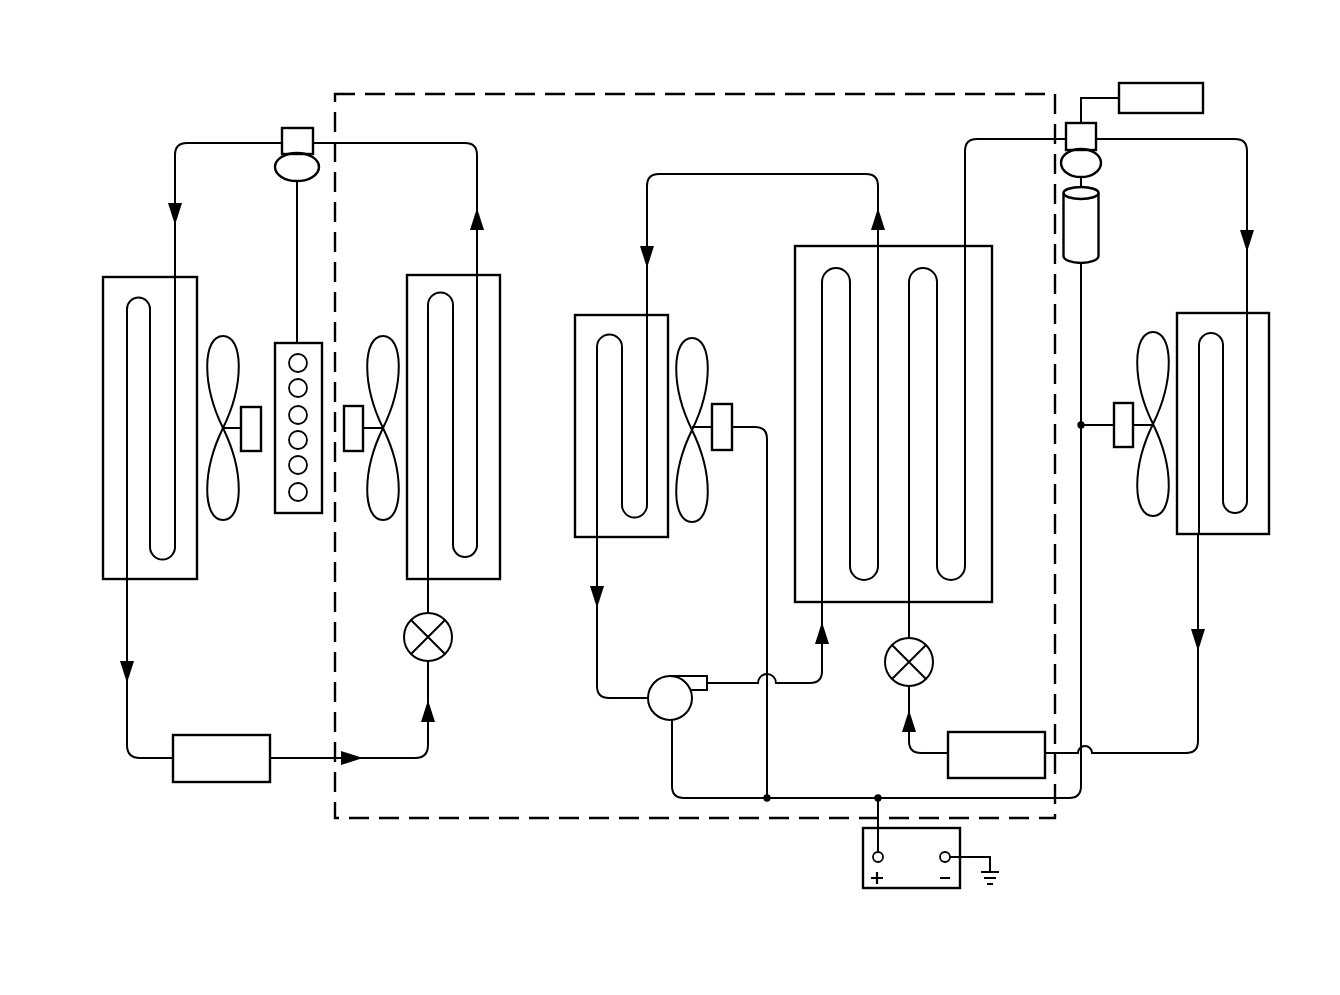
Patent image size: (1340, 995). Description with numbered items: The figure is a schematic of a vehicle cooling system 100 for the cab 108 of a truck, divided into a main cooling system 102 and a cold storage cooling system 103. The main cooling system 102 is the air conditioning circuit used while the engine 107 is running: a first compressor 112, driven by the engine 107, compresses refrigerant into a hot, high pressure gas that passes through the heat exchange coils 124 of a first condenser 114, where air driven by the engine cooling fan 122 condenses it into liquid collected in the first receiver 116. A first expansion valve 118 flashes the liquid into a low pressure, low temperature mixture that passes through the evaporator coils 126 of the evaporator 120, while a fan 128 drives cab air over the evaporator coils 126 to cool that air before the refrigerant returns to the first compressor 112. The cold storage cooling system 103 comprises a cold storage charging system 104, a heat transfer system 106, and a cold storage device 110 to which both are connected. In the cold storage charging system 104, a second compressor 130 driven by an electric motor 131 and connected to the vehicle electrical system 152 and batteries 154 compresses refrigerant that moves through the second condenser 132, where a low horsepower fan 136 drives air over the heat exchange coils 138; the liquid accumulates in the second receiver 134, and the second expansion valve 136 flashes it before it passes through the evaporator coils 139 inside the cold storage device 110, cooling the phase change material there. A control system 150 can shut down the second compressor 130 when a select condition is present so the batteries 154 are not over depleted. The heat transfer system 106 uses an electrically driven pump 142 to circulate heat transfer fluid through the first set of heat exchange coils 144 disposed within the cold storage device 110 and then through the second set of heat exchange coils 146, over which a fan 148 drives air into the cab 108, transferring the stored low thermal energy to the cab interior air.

The vehicle cooling system 100 is at (185, 828).
The main cooling system 102 is at (524, 158).
The cold storage cooling system 103 is at (1053, 822).
The cold storage charging system 104 is at (1213, 740).
The heat transfer system 106 is at (877, 160).
The engine 107 is at (288, 343).
The cab 108 is at (333, 128).
The cold storage device 110 is at (905, 246).
The first compressor 112 is at (282, 128).
The first condenser 114 is at (148, 277).
The first receiver 116 is at (228, 735).
The first expansion valve 118 is at (452, 640).
The evaporator 120 is at (500, 487).
The engine cooling fan 122 is at (253, 451).
The heat exchange coils 124 is at (175, 540).
The evaporator coils 126 is at (478, 343).
The fan 128 is at (350, 406).
The second compressor 130 is at (1096, 150).
The electric motor 131 is at (1094, 237).
The second condenser 132 is at (1270, 389).
The second receiver 134 is at (998, 732).
The second expansion valve 136 is at (932, 648).
The heat exchange coils 138 is at (1245, 505).
The evaporator coils 139 is at (970, 528).
The electrically driven pump 142 is at (678, 678).
The first set of heat exchange coils 144 is at (823, 580).
The second set of heat exchange coils 146 is at (598, 418).
The fan 148 is at (726, 404).
The control system 150 is at (1203, 100).
The vehicle electrical system 152 is at (808, 804).
The batteries 154 is at (863, 845).